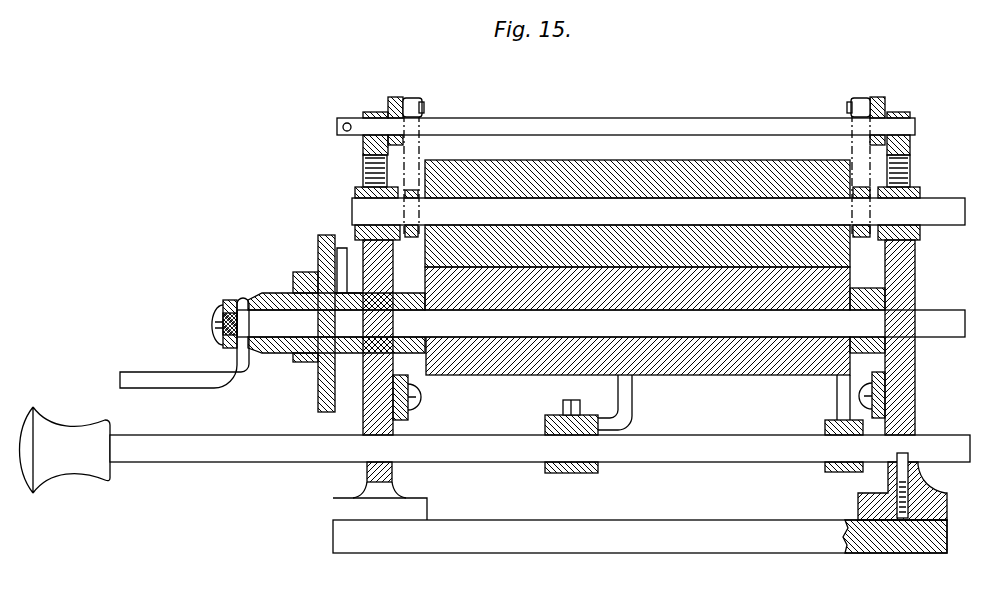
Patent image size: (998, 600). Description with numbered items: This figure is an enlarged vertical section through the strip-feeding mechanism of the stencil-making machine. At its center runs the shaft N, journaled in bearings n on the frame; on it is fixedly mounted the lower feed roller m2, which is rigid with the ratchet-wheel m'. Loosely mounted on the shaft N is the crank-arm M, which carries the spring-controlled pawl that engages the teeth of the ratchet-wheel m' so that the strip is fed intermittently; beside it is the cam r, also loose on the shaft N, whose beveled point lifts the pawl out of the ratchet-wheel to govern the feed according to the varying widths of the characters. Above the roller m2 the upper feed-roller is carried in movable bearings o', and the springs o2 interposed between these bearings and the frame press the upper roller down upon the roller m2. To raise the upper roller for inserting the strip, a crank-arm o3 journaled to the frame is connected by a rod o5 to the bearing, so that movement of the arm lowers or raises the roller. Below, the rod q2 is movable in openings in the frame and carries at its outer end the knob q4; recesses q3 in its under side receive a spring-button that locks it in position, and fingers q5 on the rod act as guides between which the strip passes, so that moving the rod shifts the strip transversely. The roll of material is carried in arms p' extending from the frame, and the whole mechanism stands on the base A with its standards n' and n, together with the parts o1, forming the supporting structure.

The crank-arm o3 is at (394, 112).
The rod o5 is at (420, 102).
The springs o2 is at (365, 168).
The movable bearings o' is at (639, 188).
The clamping block o1 is at (526, 164).
The shaft N is at (463, 358).
The roller m2 is at (529, 372).
The knob q4 is at (135, 398).
The rod q2 is at (727, 452).
The crank-arm M is at (302, 271).
The ratchet-wheel m' is at (312, 323).
The cam r is at (340, 260).
The standard n' is at (380, 372).
The arms p' is at (639, 397).
The fingers q5 is at (633, 396).
The bearings n is at (907, 330).
The recesses q3 is at (914, 460).
The base A is at (640, 549).